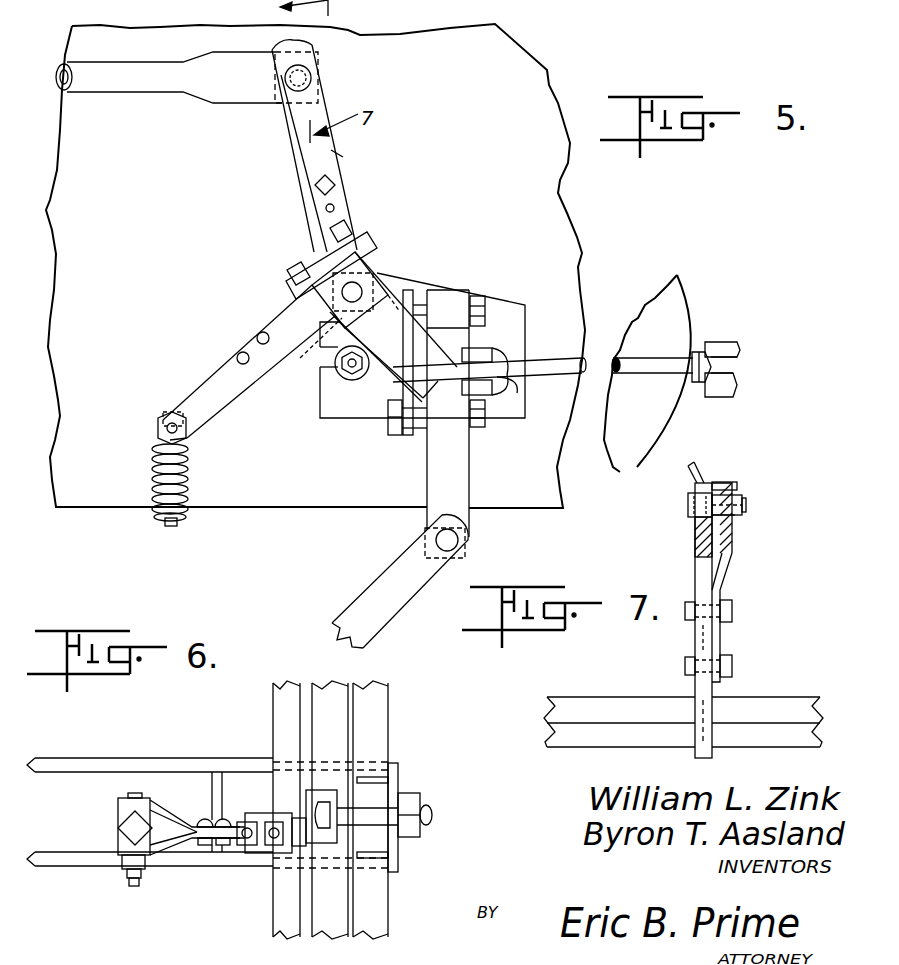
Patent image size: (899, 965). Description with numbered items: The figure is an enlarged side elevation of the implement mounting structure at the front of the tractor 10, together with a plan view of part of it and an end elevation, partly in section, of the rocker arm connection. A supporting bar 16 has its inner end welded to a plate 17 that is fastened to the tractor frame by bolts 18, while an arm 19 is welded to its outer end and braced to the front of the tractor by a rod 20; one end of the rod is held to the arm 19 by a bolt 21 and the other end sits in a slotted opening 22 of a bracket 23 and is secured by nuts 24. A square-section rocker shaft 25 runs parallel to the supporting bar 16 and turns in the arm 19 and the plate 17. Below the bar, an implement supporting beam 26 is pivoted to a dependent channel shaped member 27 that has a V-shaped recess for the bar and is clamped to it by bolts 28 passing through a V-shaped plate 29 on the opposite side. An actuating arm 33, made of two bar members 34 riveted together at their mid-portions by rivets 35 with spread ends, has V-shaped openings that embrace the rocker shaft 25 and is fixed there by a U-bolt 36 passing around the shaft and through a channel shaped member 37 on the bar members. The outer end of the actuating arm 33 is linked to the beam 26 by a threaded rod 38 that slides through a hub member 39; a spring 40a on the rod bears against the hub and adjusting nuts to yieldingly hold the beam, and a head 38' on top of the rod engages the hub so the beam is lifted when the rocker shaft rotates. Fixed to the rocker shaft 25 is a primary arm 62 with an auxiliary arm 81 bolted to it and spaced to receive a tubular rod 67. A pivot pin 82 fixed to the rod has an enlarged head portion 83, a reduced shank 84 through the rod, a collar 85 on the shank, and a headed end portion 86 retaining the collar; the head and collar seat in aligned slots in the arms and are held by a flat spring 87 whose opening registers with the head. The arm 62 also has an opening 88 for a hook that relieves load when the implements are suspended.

In FIG. 5, the tractor 10 is at (485, 68).
In FIG. 5, the supporting bar 16 is at (431, 394).
In FIG. 6, the supporting bar 16 is at (388, 721).
In FIG. 5, the plate 17 is at (417, 275).
In FIG. 5, the bolts 18 is at (351, 373).
In FIG. 5, the arm 19 is at (385, 286).
In FIG. 5, the rod 20 is at (545, 357).
In FIG. 5, the bolt 21 is at (487, 350).
In FIG. 5, the slotted opening 22 is at (738, 362).
In FIG. 5, the bracket 23 is at (702, 352).
In FIG. 5, the nuts 24 is at (741, 375).
In FIG. 5, the rocker shaft 25 is at (312, 347).
In FIG. 7, the rocker shaft 25 is at (621, 697).
In FIG. 6, the rocker shaft 25 is at (273, 699).
In FIG. 5, the implement supporting beam 26 is at (362, 592).
In FIG. 6, the implement supporting beam 26 is at (88, 758).
In FIG. 5, the channel shaped member 27 is at (455, 298).
In FIG. 6, the channel shaped member 27 is at (400, 783).
In FIG. 5, the bolts 28 is at (484, 308).
In FIG. 6, the bolts 28 is at (433, 812).
In FIG. 5, the plate 29 is at (398, 433).
In FIG. 6, the plate 29 is at (340, 848).
In FIG. 5, the actuating arm 33 is at (204, 377).
In FIG. 6, the actuating arm 33 is at (195, 822).
In FIG. 5, the bar members 34 is at (227, 405).
In FIG. 6, the bar members 34 is at (165, 800).
In FIG. 5, the rivets 35 is at (243, 352).
In FIG. 6, the rivets 35 is at (226, 820).
In FIG. 5, the U-bolt 36 is at (376, 262).
In FIG. 6, the U-bolt 36 is at (312, 845).
In FIG. 5, the channel shaped member 37 is at (300, 262).
In FIG. 6, the channel shaped member 37 is at (280, 813).
In FIG. 5, the threaded rod 38 is at (187, 534).
In FIG. 5, the head 38' is at (168, 396).
In FIG. 6, the head 38' is at (115, 856).
In FIG. 5, the hub member 39 is at (160, 420).
In FIG. 6, the hub member 39 is at (120, 812).
In FIG. 5, the spring 40a is at (153, 468).
In FIG. 5, the arm 62 is at (283, 156).
In FIG. 7, the arm 62 is at (705, 625).
In FIG. 5, the tubular rod 67 is at (126, 93).
In FIG. 7, the tubular rod 67 is at (716, 483).
In FIG. 7, the auxiliary arm 81 is at (733, 549).
In FIG. 5, the pivot pin 82 is at (312, 88).
In FIG. 7, the pivot pin 82 is at (748, 504).
In FIG. 7, the head portion 83 is at (688, 506).
In FIG. 7, the reduced shank 84 is at (727, 508).
In FIG. 7, the collar 85 is at (737, 489).
In FIG. 7, the headed end portion 86 is at (748, 507).
In FIG. 5, the flat spring 87 is at (343, 157).
In FIG. 7, the flat spring 87 is at (700, 555).
In FIG. 5, the opening 88 is at (333, 205).
In FIG. 7, the opening 88 is at (722, 650).